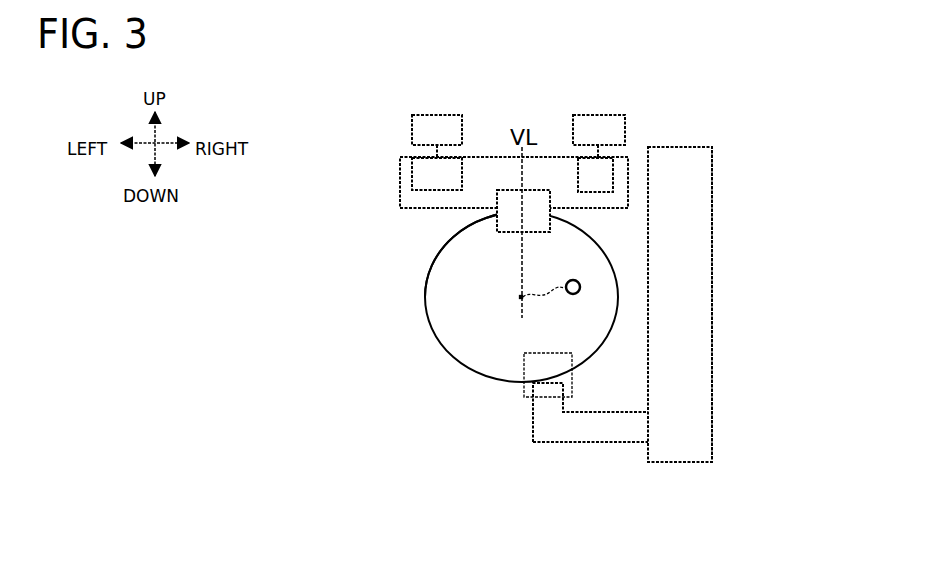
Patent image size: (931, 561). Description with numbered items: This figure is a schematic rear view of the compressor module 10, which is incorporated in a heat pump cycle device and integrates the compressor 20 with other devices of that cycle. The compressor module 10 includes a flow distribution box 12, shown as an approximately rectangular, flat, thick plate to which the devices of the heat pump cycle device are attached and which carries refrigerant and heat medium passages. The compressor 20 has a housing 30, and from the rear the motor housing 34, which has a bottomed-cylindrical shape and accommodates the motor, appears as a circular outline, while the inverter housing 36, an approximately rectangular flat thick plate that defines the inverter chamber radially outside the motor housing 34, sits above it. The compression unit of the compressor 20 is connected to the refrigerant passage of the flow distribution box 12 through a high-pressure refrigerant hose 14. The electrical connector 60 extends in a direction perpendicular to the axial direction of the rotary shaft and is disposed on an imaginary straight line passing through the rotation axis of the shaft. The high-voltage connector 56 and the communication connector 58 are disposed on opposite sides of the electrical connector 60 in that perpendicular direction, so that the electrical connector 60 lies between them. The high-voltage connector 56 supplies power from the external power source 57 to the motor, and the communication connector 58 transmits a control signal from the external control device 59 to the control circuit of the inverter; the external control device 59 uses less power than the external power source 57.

The compressor module 10 is at (736, 180).
The flow distribution box 12 is at (692, 262).
The high-pressure refrigerant hose 14 is at (545, 410).
The compressor 20 is at (480, 166).
The housing 30 is at (424, 257).
The motor housing 34 is at (447, 295).
The inverter housing 36 is at (403, 198).
The high-voltage connector 56 is at (427, 167).
The external power source 57 is at (417, 127).
The communication connector 58 is at (587, 172).
The external control device 59 is at (608, 122).
The electrical connector 60 is at (510, 227).